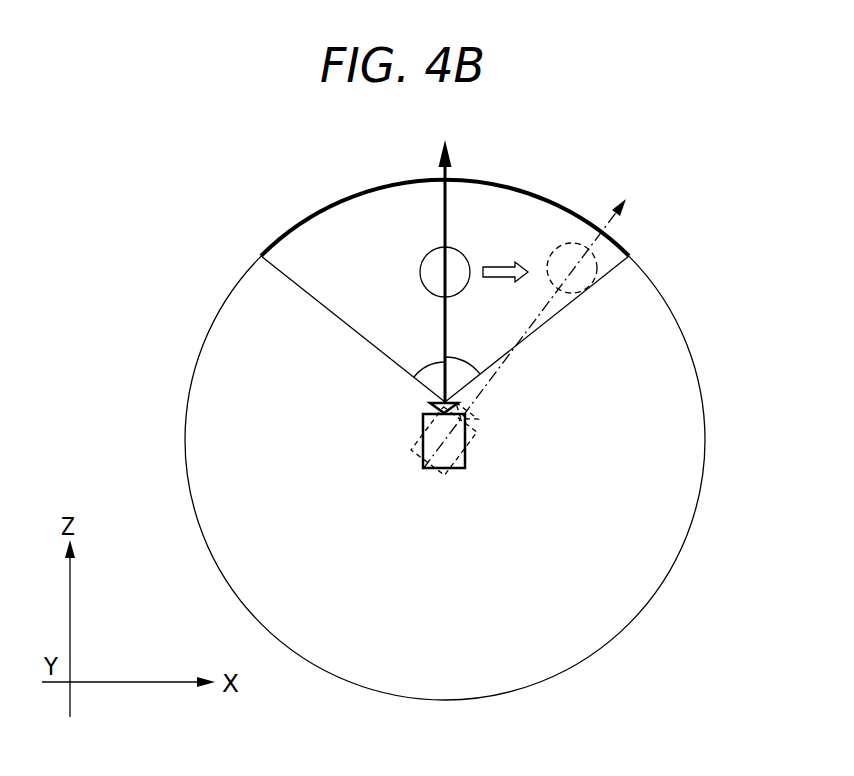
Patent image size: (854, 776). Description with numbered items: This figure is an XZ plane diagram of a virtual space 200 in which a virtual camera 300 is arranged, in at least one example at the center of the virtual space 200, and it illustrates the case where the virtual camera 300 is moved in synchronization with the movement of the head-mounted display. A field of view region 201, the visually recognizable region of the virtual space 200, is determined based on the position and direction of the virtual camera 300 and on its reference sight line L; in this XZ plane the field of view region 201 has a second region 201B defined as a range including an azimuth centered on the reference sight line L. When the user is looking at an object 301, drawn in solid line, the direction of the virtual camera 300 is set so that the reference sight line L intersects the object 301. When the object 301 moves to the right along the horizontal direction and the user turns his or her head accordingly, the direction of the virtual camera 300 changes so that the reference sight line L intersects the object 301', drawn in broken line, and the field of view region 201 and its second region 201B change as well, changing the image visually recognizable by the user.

The virtual space 200 is at (202, 348).
The field of view region 201 is at (445, 193).
The second region 201B is at (352, 230).
The virtual camera 300 is at (470, 437).
The object 301 is at (397, 272).
The object 301' is at (579, 225).
The reference sight line L is at (449, 214).